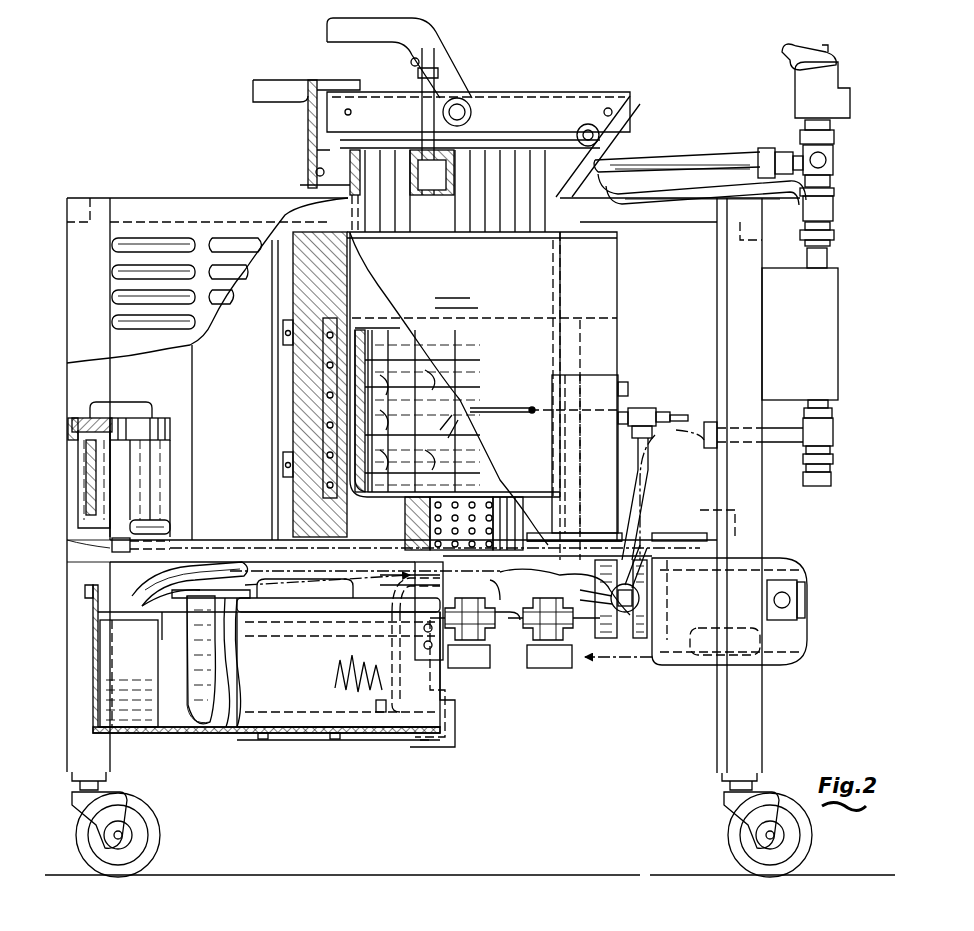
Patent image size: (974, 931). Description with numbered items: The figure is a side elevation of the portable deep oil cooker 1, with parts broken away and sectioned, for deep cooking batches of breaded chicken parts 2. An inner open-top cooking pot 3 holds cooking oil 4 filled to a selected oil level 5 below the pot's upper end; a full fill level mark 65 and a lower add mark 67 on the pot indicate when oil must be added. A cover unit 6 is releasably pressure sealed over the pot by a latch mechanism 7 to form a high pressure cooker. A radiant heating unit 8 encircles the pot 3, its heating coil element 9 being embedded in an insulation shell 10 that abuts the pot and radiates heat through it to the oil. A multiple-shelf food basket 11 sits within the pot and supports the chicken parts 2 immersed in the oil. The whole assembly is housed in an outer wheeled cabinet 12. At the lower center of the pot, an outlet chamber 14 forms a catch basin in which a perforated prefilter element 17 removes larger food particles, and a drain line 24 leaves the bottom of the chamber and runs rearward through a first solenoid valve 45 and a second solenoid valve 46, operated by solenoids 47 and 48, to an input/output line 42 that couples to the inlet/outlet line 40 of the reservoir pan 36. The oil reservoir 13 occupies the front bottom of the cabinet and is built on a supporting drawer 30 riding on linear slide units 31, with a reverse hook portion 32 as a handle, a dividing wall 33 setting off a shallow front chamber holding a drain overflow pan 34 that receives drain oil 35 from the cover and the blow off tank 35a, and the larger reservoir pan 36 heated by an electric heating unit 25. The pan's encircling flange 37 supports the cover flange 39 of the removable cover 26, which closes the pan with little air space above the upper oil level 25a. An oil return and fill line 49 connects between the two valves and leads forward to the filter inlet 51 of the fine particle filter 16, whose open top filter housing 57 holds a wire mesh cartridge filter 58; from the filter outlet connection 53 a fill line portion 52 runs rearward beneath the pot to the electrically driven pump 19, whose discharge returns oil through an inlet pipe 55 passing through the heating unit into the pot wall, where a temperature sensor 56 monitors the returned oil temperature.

The portable deep oil cooker 1 is at (232, 186).
The breaded chicken parts 2 is at (405, 400).
The cooking pot 3 is at (362, 340).
The cooking oil 4 is at (210, 690).
The oil level 5 is at (368, 338).
The cover unit 6 is at (588, 96).
The latch mechanism 7 is at (307, 130).
The radiant heating unit 8 is at (292, 408).
The heating coil element 9 is at (324, 426).
The insulation shell 10 is at (297, 282).
The multiple-shelf food basket 11 is at (455, 413).
The wheeled cabinet 12 is at (165, 198).
The oil reservoir 13 is at (405, 742).
The outlet chamber 14 is at (405, 535).
The fine particle filter 16 is at (78, 490).
The prefilter element 17 is at (428, 515).
The pump 19 is at (645, 600).
The drain line 24 is at (574, 554).
The electric heating unit 25 is at (300, 740).
The upper oil level 25a is at (235, 633).
The removable cover 26 is at (150, 600).
The supporting drawer 30 is at (170, 736).
The linear slide units 31 is at (325, 648).
The reverse hook portion 32 is at (93, 606).
The dividing wall 33 is at (125, 684).
The drain overflow pan 34 is at (93, 670).
The drain oil 35 is at (93, 708).
The blow off tank 35a is at (840, 370).
The reservoir pan 36 is at (232, 736).
The encircling flange 37 is at (392, 625).
The cover flange 39 is at (408, 576).
The inlet/outlet line 40 is at (376, 707).
The input/output line 42 is at (515, 606).
The first solenoid valve 45 is at (568, 668).
The second solenoid valve 46 is at (490, 672).
The solenoid 47 is at (535, 668).
The solenoid 48 is at (460, 668).
The oil return and fill line 49 is at (645, 470).
The filter inlet 51 is at (112, 545).
The fill line portion 52 is at (165, 526).
The filter outlet connection 53 is at (133, 520).
The inlet pipe 55 is at (632, 390).
The temperature sensor 56 is at (665, 412).
The filter housing 57 is at (80, 470).
The cartridge filter 58 is at (80, 450).
The full fill level mark 65 is at (462, 298).
The add mark 67 is at (478, 308).